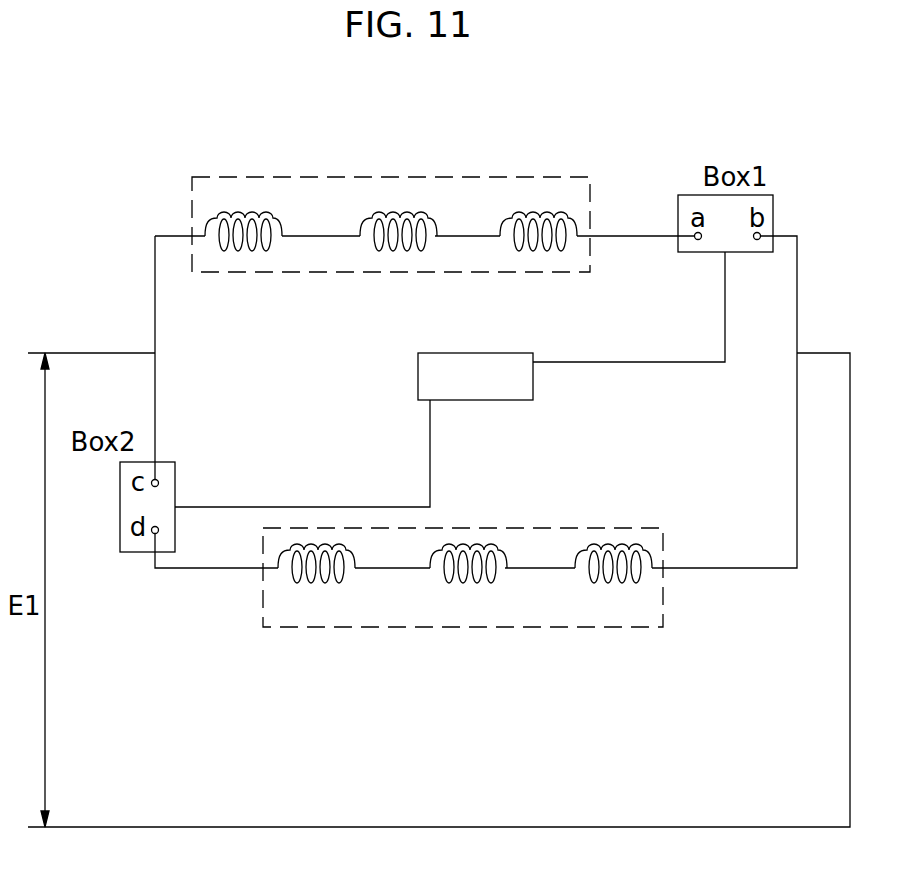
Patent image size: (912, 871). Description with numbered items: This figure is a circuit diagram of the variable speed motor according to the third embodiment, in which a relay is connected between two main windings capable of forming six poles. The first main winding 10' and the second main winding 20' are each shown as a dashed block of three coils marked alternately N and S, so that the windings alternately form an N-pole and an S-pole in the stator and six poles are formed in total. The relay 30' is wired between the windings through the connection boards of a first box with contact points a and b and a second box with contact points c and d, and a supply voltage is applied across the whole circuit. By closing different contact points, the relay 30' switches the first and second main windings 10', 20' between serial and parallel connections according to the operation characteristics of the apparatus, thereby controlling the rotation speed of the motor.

The first main winding 10' is at (391, 180).
The second main winding 20' is at (463, 619).
The relay 30' is at (533, 380).